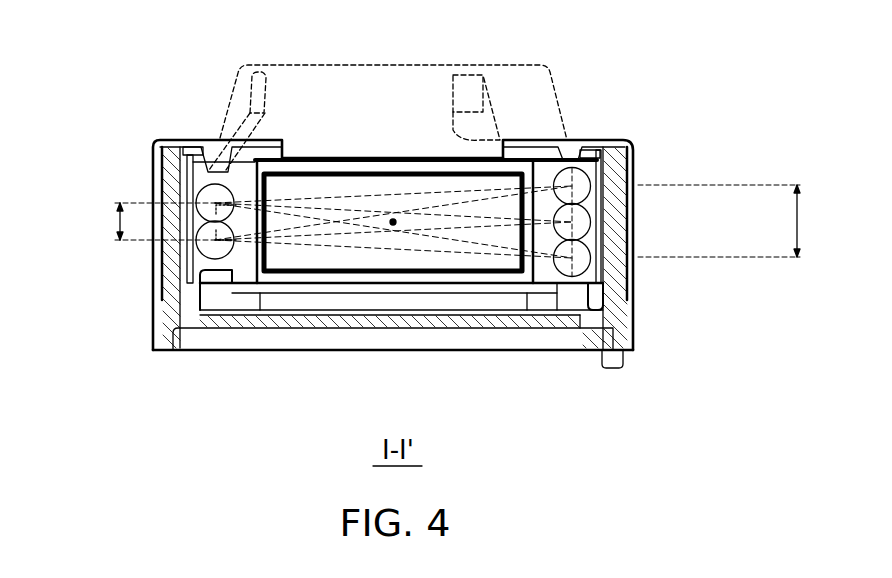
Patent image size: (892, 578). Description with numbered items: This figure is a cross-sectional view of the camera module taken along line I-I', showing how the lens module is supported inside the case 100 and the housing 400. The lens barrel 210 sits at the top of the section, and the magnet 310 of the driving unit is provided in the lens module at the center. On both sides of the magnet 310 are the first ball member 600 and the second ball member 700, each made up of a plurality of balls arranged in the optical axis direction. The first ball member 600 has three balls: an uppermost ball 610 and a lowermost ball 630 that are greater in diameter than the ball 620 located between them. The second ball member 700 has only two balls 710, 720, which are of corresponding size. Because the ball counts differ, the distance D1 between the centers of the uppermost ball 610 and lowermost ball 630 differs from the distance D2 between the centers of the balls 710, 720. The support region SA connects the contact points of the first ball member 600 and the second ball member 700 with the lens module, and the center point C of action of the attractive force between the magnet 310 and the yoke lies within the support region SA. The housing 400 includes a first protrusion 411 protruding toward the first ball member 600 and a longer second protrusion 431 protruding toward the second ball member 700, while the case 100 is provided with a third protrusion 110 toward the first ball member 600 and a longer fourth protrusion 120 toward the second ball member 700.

The case 100 is at (173, 140).
The third protrusion 110 is at (630, 173).
The fourth protrusion 120 is at (160, 158).
The lens barrel 210 is at (516, 93).
The magnet 310 is at (322, 262).
The housing 400 is at (167, 313).
The first protrusion 411 is at (587, 332).
The second protrusion 431 is at (212, 283).
The first ball member 600 is at (725, 187).
The uppermost ball 610 is at (633, 197).
The ball 620 is at (633, 222).
The lowermost ball 630 is at (633, 245).
The second ball member 700 is at (67, 247).
The uppermost ball 710 is at (160, 246).
The lowermost ball 720 is at (160, 293).
The center point of action C is at (393, 222).
The support region SA is at (407, 193).
The distance D1 is at (735, 221).
The distance D2 is at (159, 221).